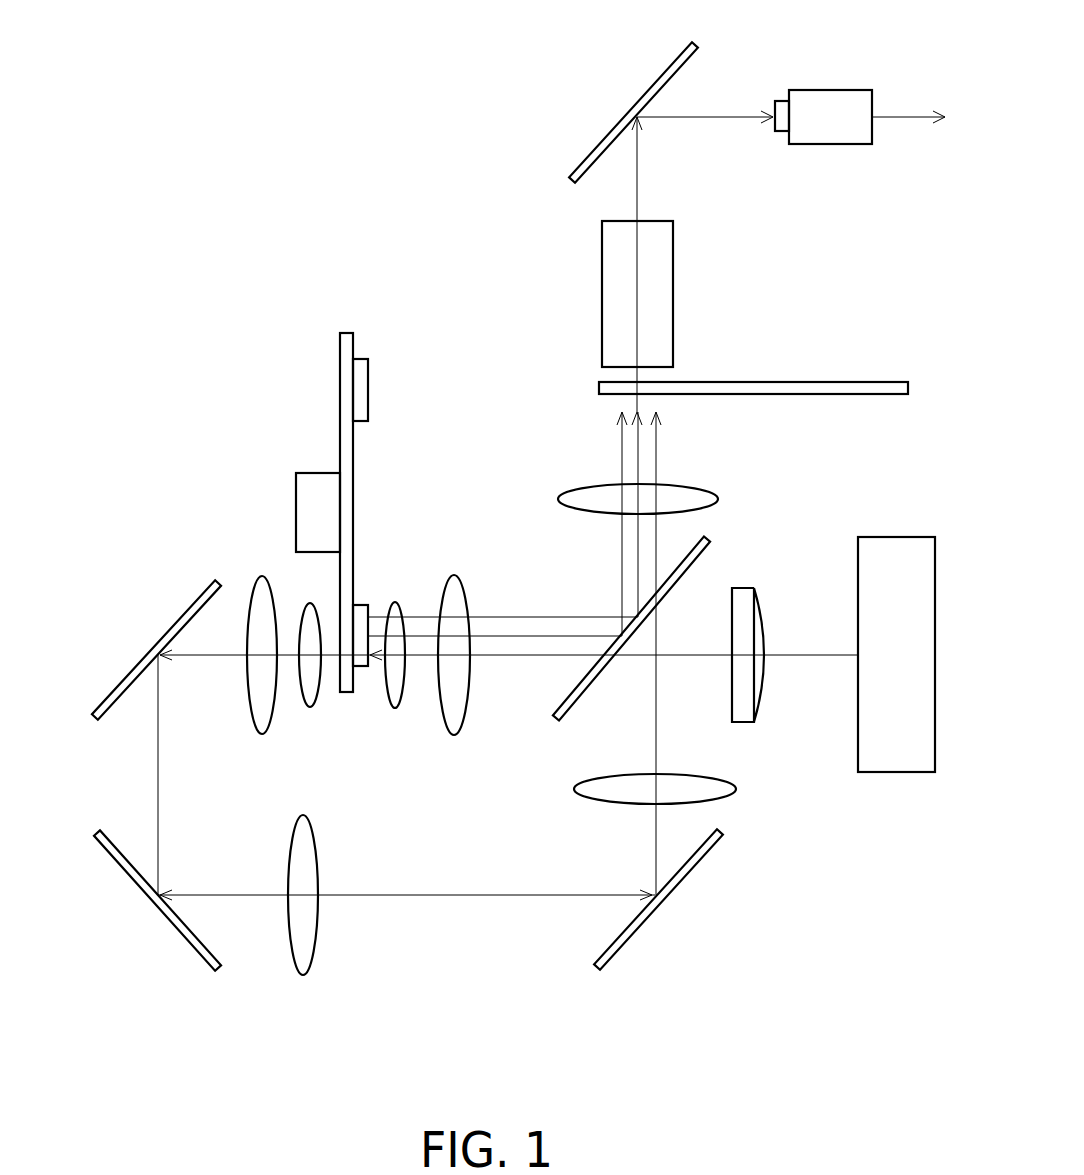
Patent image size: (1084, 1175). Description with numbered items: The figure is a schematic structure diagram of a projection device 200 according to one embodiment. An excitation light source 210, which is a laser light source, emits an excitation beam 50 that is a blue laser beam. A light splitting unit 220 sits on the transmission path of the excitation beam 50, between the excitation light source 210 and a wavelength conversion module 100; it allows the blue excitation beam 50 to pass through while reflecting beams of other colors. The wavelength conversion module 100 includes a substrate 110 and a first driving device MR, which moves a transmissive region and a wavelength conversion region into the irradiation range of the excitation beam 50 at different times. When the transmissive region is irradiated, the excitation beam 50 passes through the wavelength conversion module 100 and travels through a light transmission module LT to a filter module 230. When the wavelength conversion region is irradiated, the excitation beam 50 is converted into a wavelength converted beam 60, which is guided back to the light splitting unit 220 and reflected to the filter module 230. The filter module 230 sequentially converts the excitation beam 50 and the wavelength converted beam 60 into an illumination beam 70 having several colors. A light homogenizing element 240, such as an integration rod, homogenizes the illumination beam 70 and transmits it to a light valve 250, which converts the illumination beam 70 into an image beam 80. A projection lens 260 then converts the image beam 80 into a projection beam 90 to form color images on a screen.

The excitation beam 50 is at (657, 462).
The wavelength converted beam 60 is at (637, 465).
The illumination beam 70 is at (640, 181).
The image beam 80 is at (722, 116).
The projection beam 90 is at (901, 116).
The wavelength conversion module 100 is at (411, 331).
The substrate 110 is at (340, 385).
The first driving device MR is at (300, 508).
The light transmission module LT is at (130, 667).
The projection device 200 is at (877, 1000).
The excitation light source 210 is at (895, 773).
The light splitting unit 220 is at (708, 558).
The filter module 230 is at (858, 395).
The light homogenizing element 240 is at (602, 295).
The light valve 250 is at (650, 82).
The projection lens 260 is at (827, 90).